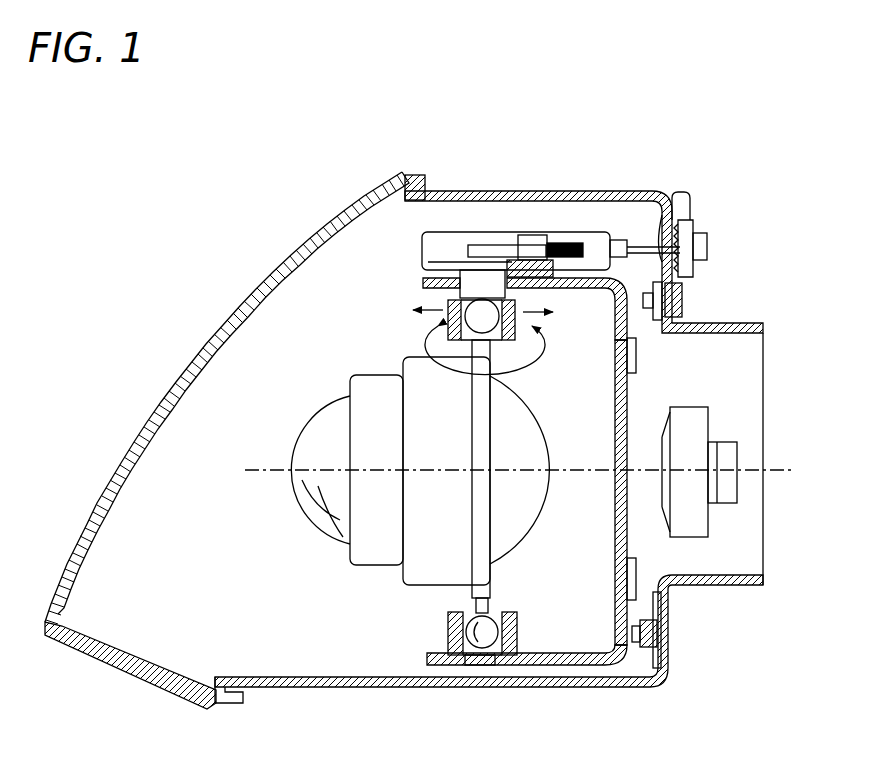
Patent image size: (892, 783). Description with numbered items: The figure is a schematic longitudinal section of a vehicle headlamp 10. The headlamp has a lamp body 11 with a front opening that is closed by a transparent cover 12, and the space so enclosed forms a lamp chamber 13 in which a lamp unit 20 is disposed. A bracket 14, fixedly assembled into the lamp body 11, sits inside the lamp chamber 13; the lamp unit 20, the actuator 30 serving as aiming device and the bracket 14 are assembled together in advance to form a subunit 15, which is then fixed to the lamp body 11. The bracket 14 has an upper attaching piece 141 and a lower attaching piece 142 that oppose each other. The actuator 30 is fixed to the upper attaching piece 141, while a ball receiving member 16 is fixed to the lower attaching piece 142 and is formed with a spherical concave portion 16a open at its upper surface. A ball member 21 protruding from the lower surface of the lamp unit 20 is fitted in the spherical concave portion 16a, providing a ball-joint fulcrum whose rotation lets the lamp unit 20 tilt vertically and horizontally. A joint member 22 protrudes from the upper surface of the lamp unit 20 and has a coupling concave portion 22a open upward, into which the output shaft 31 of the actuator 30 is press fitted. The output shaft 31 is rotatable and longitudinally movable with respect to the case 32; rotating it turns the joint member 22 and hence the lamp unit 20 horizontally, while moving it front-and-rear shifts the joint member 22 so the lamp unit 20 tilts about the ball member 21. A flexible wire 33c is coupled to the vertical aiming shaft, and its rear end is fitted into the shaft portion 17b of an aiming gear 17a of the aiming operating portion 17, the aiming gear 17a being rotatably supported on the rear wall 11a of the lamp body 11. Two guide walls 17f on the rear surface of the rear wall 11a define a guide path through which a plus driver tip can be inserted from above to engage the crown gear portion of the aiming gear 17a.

The vehicle headlamp 10 is at (539, 157).
The lamp body 11 is at (640, 191).
The rear wall 11a is at (680, 297).
The transparent cover 12 is at (235, 303).
The lamp chamber 13 is at (330, 632).
The bracket 14 is at (627, 390).
The upper attaching piece 141 is at (577, 290).
The lower attaching piece 142 is at (540, 667).
The subunit 15 is at (634, 535).
The ball receiving member 16 is at (455, 628).
The spherical concave portion 16a is at (470, 661).
The aiming operating portion 17 is at (712, 207).
The aiming gear 17a is at (690, 266).
The shaft portion 17b is at (666, 212).
The guide walls 17f is at (686, 196).
The lamp unit 20 is at (356, 366).
The ball member 21 is at (517, 624).
The joint member 22 is at (425, 332).
The coupling concave portion 22a is at (462, 360).
The actuator 30 is at (468, 232).
The output shaft 31 is at (512, 357).
The case 32 is at (499, 245).
The flexible wire 33c is at (643, 242).